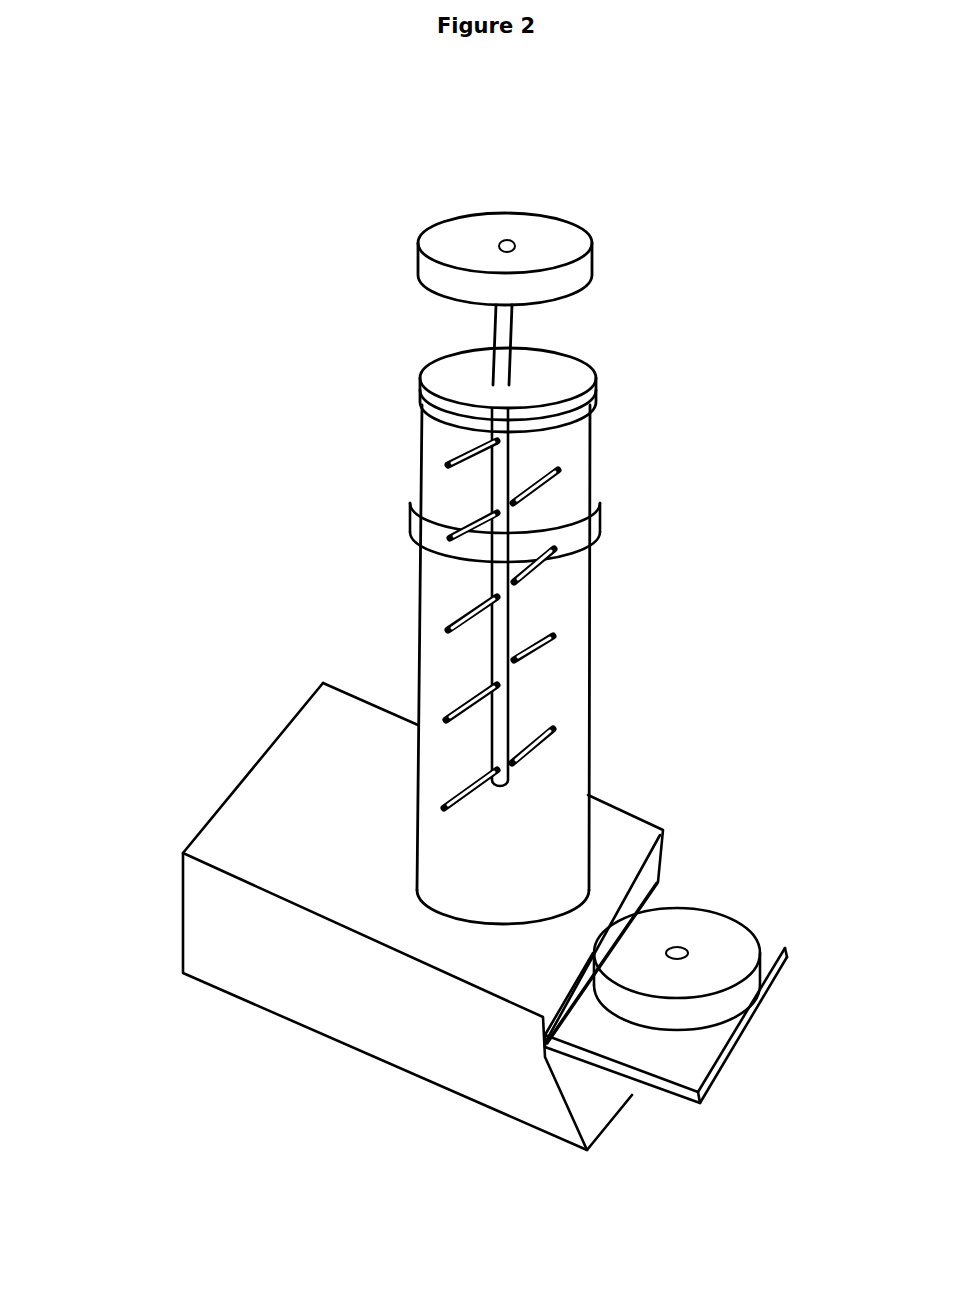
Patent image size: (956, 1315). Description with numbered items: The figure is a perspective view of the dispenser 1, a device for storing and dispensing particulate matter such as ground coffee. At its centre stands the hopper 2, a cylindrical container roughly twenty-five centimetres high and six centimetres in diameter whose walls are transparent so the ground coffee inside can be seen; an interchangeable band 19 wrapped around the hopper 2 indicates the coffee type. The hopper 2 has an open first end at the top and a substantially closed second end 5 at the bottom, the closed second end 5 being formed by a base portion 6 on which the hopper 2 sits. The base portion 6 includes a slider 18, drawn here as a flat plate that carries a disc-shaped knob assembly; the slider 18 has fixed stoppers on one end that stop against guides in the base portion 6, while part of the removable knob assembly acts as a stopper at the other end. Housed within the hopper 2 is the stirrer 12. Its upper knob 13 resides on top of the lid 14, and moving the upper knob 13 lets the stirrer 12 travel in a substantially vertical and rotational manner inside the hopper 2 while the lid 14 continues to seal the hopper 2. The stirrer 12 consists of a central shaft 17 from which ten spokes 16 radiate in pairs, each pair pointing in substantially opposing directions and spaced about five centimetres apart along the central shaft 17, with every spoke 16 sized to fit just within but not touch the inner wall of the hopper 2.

The dispenser 1 is at (665, 245).
The hopper 2 is at (418, 590).
The second end 5 is at (458, 865).
The base portion 6 is at (182, 920).
The stirrer 12 is at (457, 497).
The upper knob 13 is at (432, 270).
The lid 14 is at (448, 373).
The spokes 16 is at (440, 720).
The central shaft 17 is at (500, 630).
The slider 18 is at (652, 1080).
The interchangeable band 19 is at (580, 520).